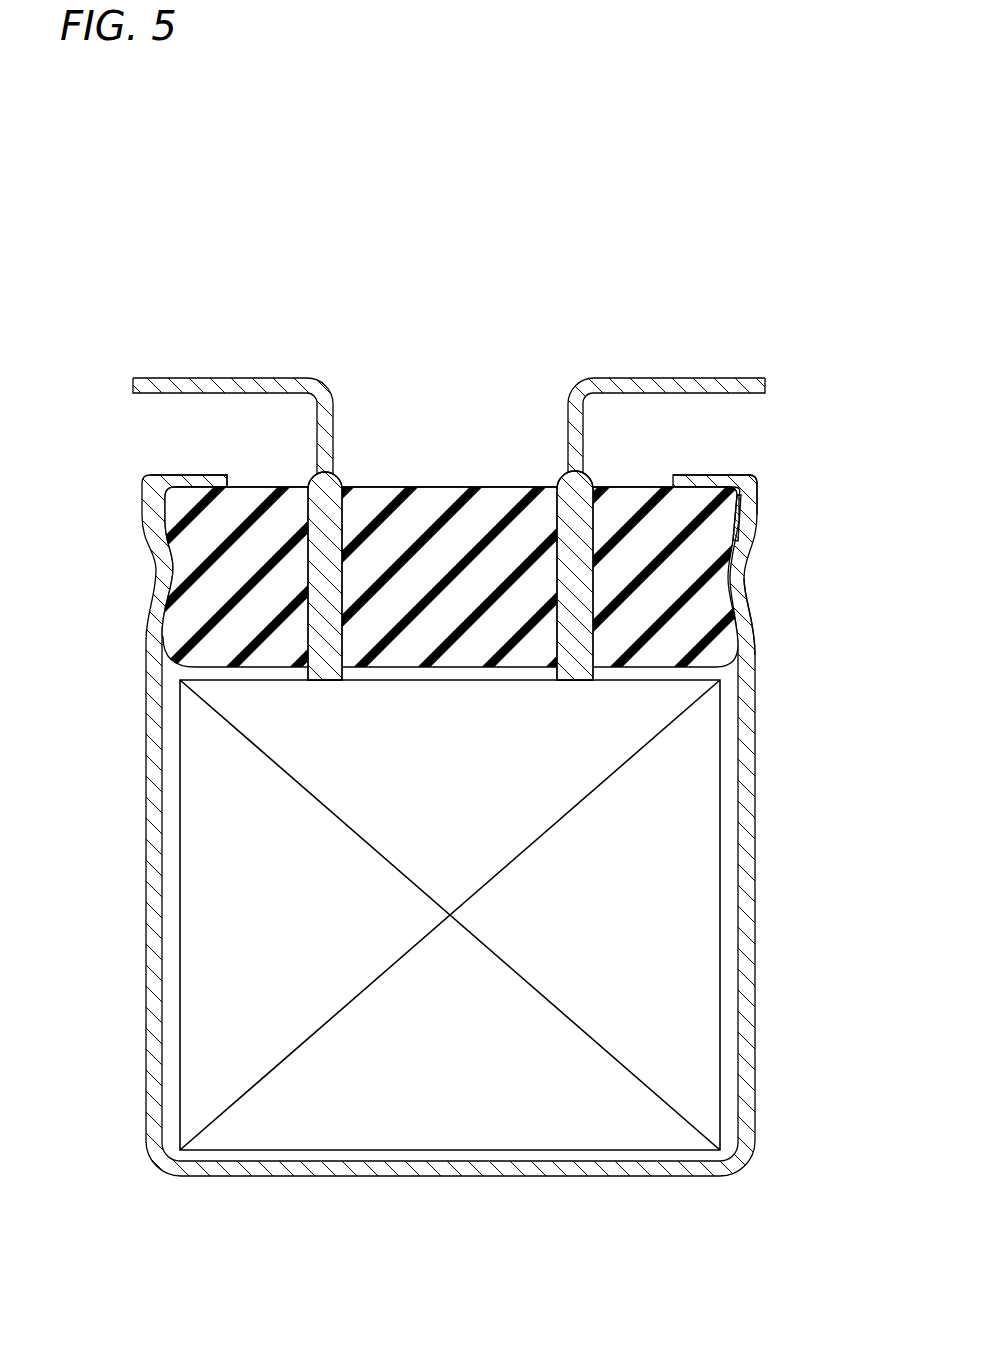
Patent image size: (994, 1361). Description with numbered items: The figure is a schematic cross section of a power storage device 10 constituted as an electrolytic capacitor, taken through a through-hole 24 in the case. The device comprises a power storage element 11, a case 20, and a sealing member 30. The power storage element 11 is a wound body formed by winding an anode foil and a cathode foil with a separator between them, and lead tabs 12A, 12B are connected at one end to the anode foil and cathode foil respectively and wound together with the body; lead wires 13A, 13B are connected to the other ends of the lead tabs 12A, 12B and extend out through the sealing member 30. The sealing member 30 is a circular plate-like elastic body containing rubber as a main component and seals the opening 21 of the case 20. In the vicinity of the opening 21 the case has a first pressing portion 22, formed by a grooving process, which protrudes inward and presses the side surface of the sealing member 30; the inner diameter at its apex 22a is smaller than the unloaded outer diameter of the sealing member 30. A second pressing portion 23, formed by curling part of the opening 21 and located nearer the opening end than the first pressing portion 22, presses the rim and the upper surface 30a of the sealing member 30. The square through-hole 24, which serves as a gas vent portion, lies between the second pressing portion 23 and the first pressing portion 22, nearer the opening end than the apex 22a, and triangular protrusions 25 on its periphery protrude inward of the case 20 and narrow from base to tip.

The power storage device 10 is at (363, 338).
The power storage element 11 is at (688, 932).
The lead tab 12A is at (322, 636).
The lead tab 12B is at (580, 612).
The lead wire 13A is at (190, 378).
The lead wire 13B is at (688, 378).
The case 20 is at (755, 847).
The opening 21 is at (450, 544).
The first pressing portion 22 is at (742, 573).
The apex of the first pressing portion 22a is at (735, 617).
The second pressing portion 23 is at (198, 475).
The through-hole 24 is at (752, 513).
The protrusion 25 is at (760, 478).
The sealing member 30 is at (450, 544).
The upper surface of the sealing member 30a is at (428, 487).